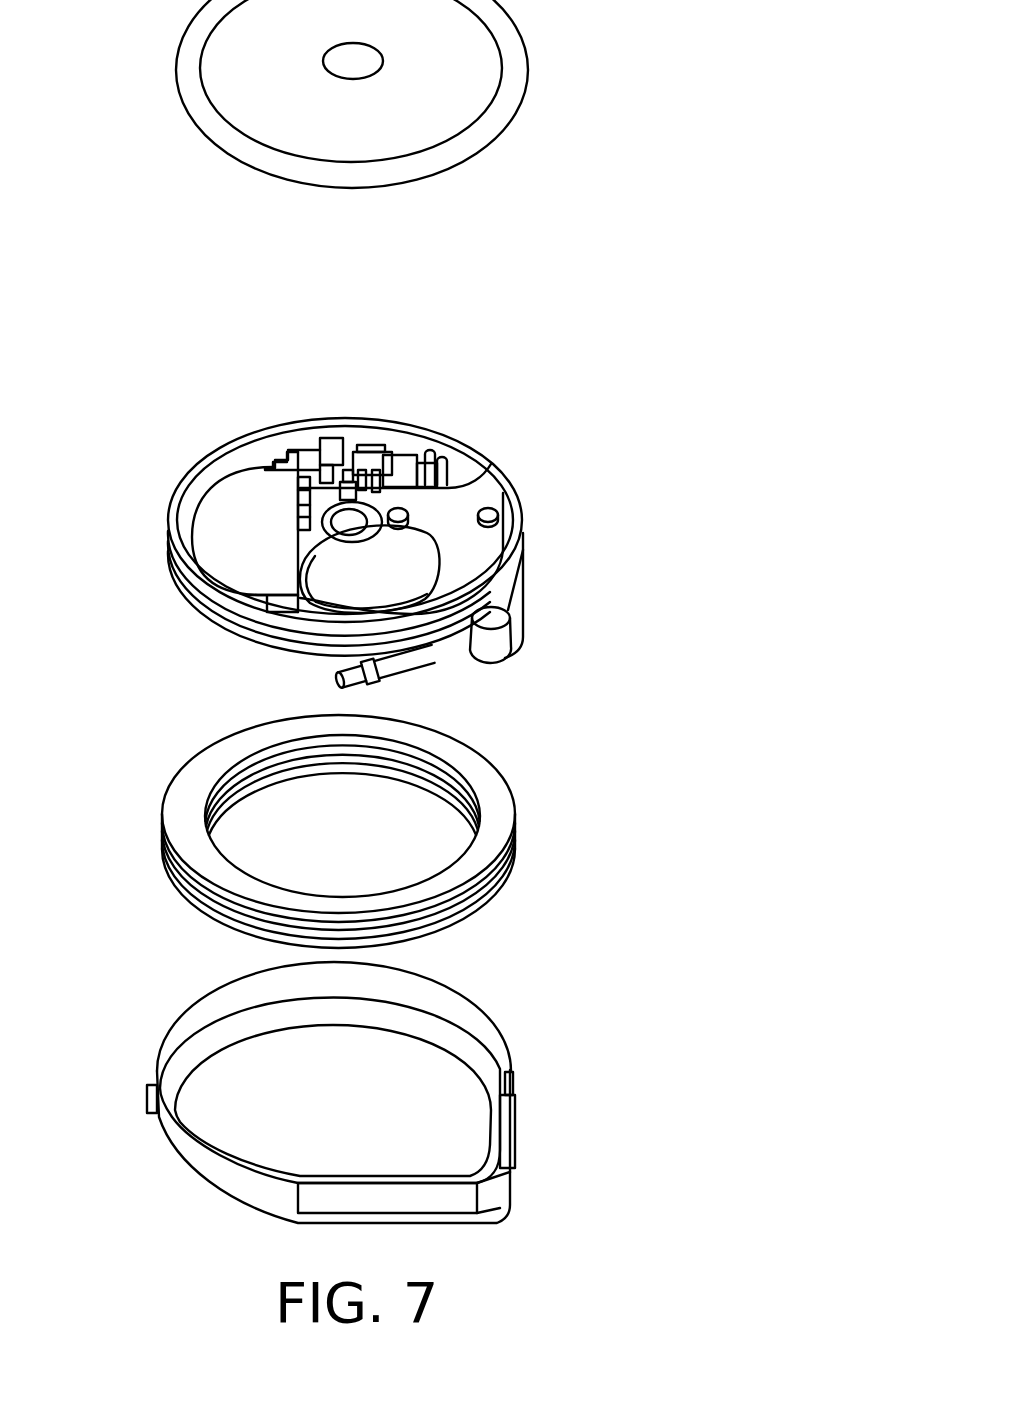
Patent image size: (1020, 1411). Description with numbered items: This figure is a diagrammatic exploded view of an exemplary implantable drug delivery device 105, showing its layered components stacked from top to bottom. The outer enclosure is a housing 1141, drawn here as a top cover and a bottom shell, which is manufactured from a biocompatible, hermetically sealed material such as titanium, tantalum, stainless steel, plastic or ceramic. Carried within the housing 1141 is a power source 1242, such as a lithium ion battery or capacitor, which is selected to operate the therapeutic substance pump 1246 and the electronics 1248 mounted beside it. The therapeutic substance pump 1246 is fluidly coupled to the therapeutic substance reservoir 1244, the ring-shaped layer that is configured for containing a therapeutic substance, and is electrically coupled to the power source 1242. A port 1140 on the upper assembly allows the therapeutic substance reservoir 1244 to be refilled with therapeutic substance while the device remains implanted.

The implantable drug delivery device 105 is at (434, 611).
The port 1140 is at (343, 522).
The housing 1141 is at (528, 90).
The power source 1242 is at (212, 511).
The therapeutic substance reservoir 1244 is at (500, 820).
The therapeutic substance pump 1246 is at (352, 587).
The electronics 1248 is at (367, 447).